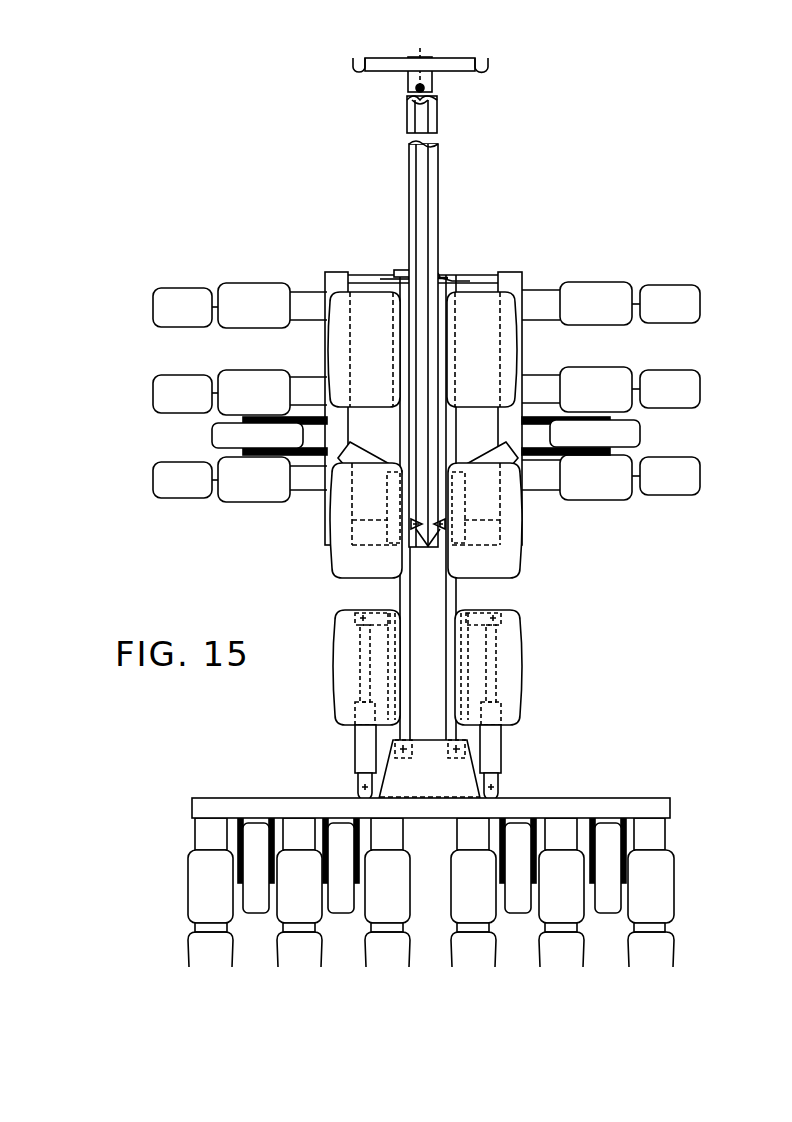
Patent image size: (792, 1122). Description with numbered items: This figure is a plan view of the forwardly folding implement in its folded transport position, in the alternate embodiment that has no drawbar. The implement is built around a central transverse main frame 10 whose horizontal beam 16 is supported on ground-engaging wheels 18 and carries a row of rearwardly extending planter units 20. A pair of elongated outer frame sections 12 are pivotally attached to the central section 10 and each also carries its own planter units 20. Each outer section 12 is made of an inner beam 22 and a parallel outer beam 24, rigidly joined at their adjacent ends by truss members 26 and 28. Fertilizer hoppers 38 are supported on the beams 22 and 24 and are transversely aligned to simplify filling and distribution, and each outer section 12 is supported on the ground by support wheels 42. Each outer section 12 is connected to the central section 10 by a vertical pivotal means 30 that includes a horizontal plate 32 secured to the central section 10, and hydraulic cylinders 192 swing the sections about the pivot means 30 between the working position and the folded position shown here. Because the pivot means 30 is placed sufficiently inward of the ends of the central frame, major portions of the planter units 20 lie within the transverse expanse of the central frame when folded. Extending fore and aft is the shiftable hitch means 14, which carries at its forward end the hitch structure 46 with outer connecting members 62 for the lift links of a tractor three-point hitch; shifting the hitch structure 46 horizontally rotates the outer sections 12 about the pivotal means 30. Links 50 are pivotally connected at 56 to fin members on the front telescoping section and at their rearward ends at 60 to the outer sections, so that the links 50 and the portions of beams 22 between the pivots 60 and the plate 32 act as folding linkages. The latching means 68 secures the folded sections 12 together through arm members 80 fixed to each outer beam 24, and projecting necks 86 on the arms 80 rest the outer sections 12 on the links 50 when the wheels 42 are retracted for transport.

The main frame 10 is at (676, 776).
The outer frame section 12 is at (112, 313).
The hitch means 14 is at (484, 124).
The transverse horizontal beam 16 is at (248, 801).
The ground-engaging wheels 18 is at (259, 912).
The planter units 20 is at (700, 930).
The inner portion beam 22 is at (392, 592).
The outer portion beam 24 is at (333, 272).
The truss member 26 is at (350, 453).
The truss member 28 is at (372, 538).
The vertical pivotal means 30 is at (428, 732).
The horizontal plate 32 is at (441, 792).
The fertilizer hoppers 38 is at (143, 406).
The support wheels 42 is at (212, 437).
The hitch structure 46 is at (437, 72).
The links 50 is at (409, 190).
The pivotal connection 56 is at (415, 89).
The pivot 60 is at (428, 544).
The outer connecting members 62 is at (352, 66).
The latching means 68 is at (441, 266).
The arm members 80 is at (400, 272).
The projecting necks 86 is at (448, 278).
The hydraulic cylinders 192 is at (355, 745).